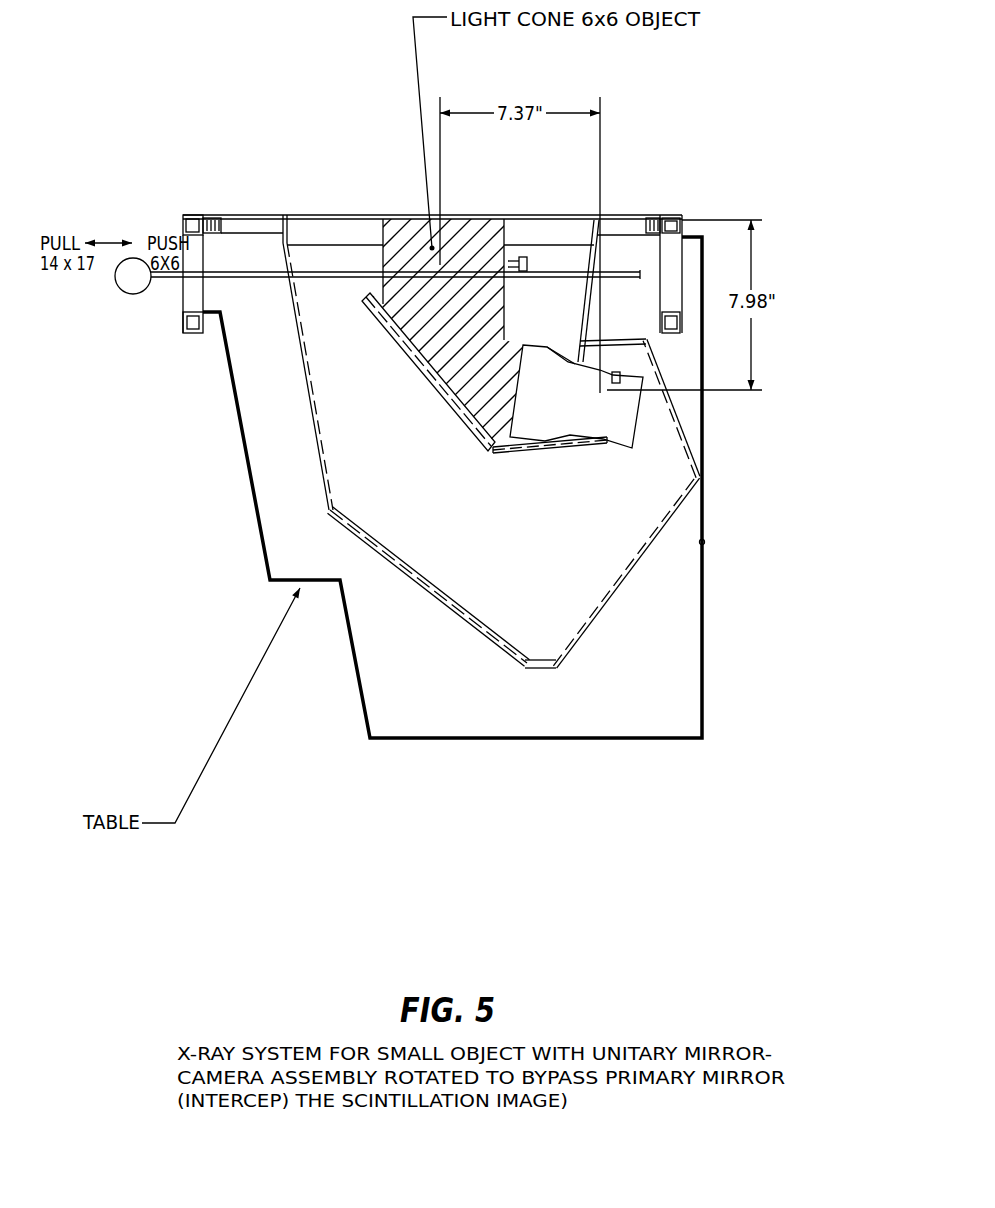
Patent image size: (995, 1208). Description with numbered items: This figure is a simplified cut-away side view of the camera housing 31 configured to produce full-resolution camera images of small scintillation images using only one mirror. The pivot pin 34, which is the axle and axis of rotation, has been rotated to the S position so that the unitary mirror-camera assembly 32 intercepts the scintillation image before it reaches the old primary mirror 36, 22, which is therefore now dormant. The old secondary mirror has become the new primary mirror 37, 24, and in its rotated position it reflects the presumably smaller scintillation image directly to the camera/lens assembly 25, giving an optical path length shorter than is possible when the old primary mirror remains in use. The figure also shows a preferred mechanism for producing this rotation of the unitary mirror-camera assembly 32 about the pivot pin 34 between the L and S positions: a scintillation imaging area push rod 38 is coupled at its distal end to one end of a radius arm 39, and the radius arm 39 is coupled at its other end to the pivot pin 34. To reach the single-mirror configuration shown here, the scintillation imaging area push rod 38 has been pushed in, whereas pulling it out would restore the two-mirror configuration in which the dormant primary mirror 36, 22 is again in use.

The new primary mirror 37 is at (336, 254).
The secondary mirror 24 is at (336, 254).
The radius arm 39 is at (673, 256).
The camera housing 31 is at (481, 455).
The pivot pin 34 is at (702, 542).
The camera/lens assembly 25 is at (702, 534).
The unitary mirror-camera assembly 32 is at (639, 622).
The scintillation imaging area push rod 38 is at (345, 399).
The dormant primary mirror 36 is at (436, 690).
The primary mirror 22 is at (436, 690).